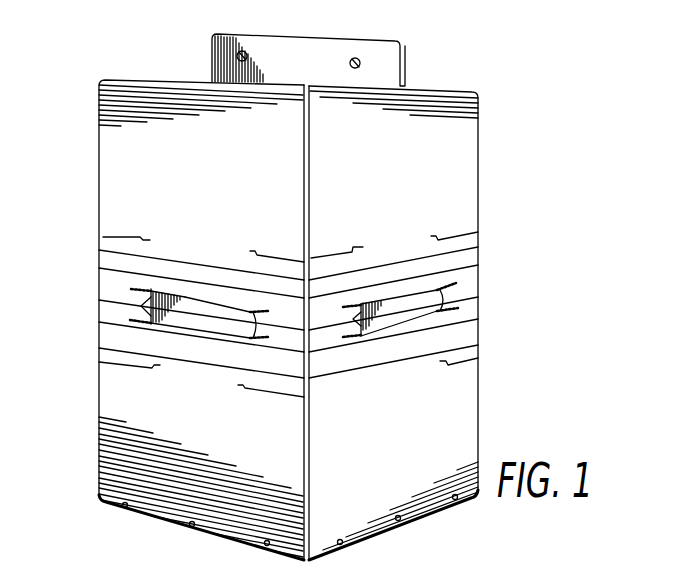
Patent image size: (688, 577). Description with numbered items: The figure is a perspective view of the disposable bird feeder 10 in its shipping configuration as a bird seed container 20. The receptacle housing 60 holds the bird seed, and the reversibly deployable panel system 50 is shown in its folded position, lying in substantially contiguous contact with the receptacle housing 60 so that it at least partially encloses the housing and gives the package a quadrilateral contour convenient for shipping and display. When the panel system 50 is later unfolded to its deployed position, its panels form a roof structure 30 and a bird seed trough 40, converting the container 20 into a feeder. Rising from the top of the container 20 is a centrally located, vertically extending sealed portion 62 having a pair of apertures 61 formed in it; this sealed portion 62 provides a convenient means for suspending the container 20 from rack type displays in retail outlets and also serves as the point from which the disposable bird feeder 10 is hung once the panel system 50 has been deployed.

The disposable bird feeder 10 is at (487, 146).
The bird seed container 20 is at (481, 91).
The roof structure 30 is at (481, 248).
The bird seed trough 40 is at (310, 348).
The reversibly deployable panel system 50 is at (341, 296).
The receptacle housing 60 is at (140, 303).
The apertures 61 is at (246, 51).
The sealed portion 62 is at (406, 60).